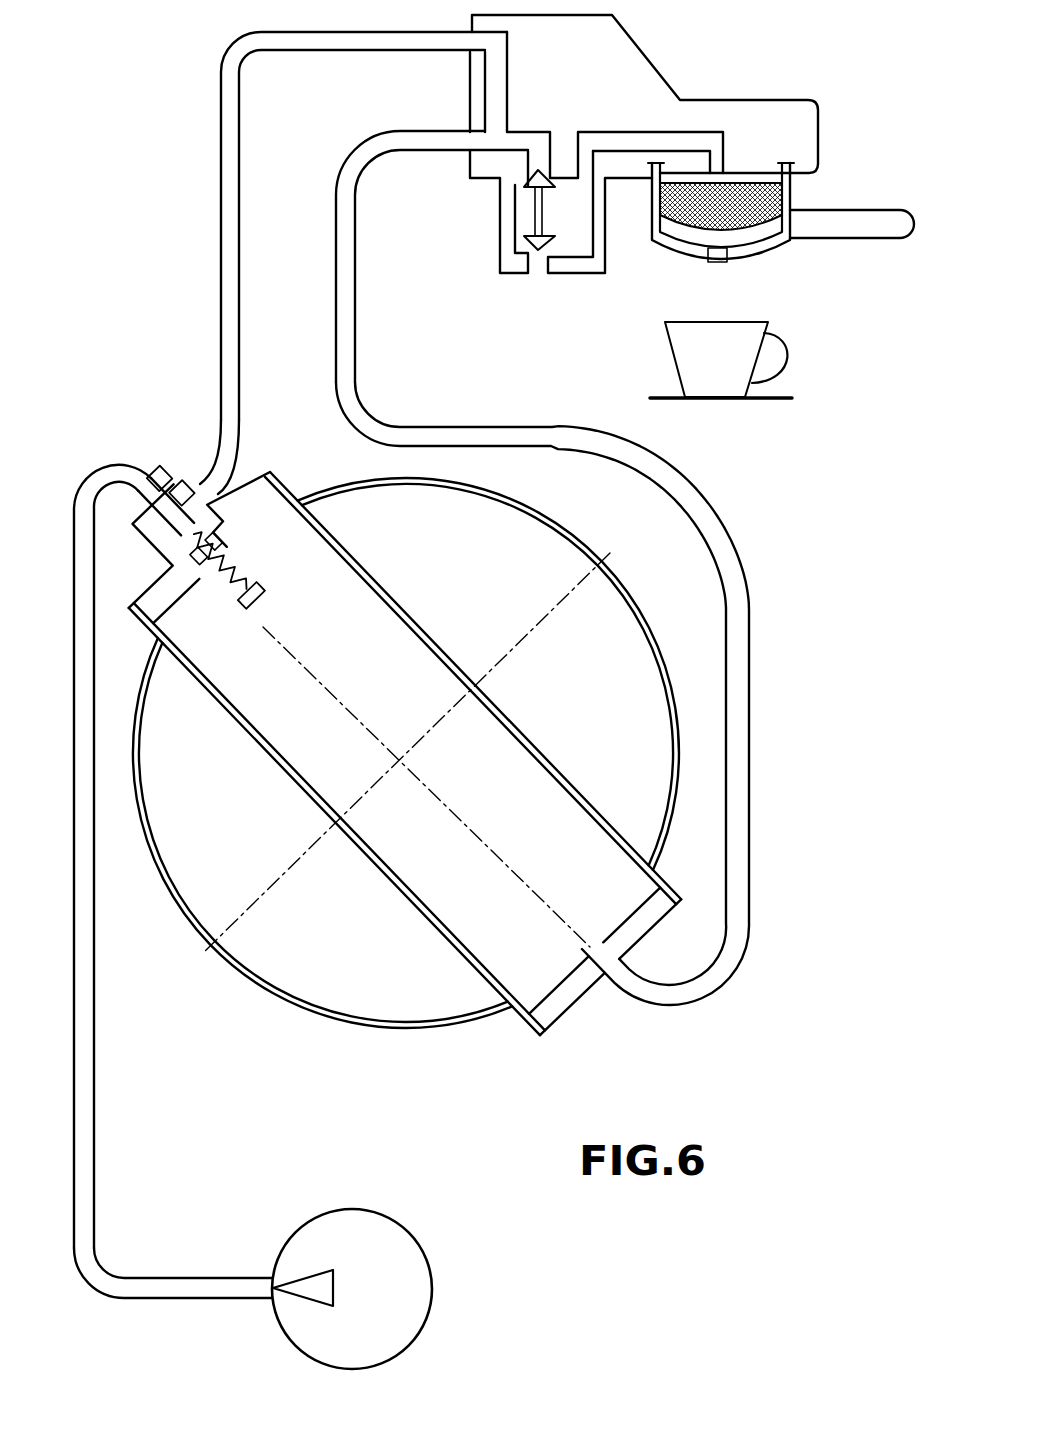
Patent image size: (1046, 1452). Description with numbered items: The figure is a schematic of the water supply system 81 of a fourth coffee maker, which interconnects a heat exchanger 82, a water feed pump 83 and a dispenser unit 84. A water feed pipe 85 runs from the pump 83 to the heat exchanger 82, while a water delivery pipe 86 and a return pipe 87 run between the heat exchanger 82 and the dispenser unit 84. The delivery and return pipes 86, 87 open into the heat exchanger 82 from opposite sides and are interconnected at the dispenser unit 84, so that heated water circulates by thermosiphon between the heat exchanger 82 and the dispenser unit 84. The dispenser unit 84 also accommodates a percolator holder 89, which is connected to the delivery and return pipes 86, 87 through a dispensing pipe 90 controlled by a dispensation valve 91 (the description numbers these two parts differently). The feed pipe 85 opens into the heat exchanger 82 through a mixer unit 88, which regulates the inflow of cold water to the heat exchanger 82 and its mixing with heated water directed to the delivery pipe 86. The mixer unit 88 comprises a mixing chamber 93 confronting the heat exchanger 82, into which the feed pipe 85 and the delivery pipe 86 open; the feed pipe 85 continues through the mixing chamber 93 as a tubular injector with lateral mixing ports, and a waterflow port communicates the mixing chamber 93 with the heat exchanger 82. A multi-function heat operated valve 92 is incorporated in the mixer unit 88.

The water supply system 81 is at (722, 473).
The heat exchanger 82 is at (413, 903).
The water feed pump 83 is at (380, 1230).
The dispenser unit 84 is at (757, 123).
The water feed pipe 85 is at (95, 1012).
The water delivery pipe 86 is at (232, 198).
The return pipe 87 is at (736, 678).
The mixer unit 88 is at (118, 538).
The percolator holder 89 is at (753, 215).
The brew head channel 90 is at (668, 137).
The valve 91 is at (538, 250).
The multi-function heat operated valve 92 is at (214, 621).
The mixing chamber 93 is at (190, 500).